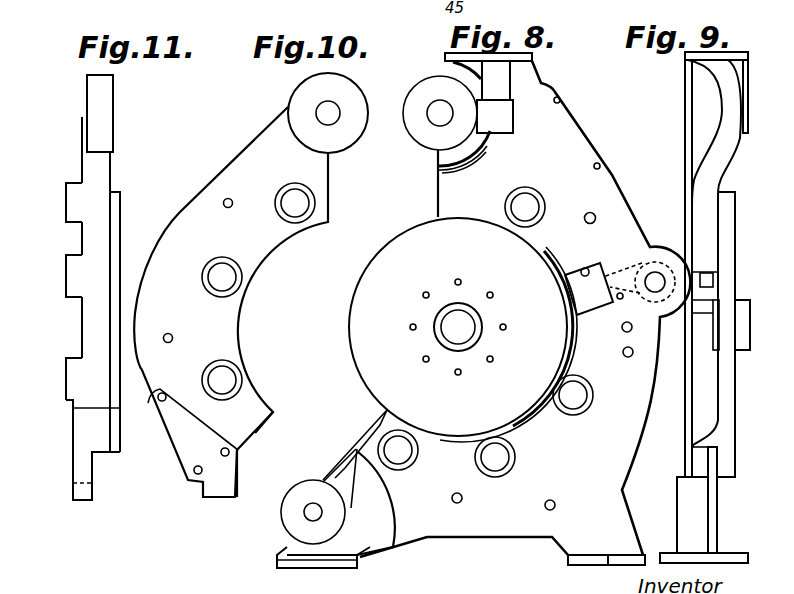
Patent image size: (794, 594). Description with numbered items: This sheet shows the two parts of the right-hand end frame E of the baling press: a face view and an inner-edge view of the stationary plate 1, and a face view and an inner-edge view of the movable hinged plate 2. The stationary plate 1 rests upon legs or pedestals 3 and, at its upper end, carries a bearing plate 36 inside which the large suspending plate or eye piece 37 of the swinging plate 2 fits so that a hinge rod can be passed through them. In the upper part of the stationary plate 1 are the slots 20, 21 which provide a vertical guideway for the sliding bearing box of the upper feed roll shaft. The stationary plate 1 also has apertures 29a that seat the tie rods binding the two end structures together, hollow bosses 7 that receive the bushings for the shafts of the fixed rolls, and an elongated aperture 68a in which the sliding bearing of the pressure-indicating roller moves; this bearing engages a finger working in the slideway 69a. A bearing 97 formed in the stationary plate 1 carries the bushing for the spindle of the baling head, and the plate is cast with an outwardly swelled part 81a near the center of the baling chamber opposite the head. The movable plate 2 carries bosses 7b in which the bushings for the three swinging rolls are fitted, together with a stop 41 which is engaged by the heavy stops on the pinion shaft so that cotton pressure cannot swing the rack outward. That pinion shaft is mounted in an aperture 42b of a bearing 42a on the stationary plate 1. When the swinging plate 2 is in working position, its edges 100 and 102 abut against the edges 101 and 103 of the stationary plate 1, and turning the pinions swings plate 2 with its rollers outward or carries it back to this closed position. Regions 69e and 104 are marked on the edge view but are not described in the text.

In FIG. 8, the stationary plate 1 is at (485, 180).
In FIG. 9, the stationary plate 1 is at (705, 170).
In FIG. 11, the movable hinged plate 2 is at (103, 174).
In FIG. 10, the movable hinged plate 2 is at (231, 302).
In FIG. 10, the legs or pedestals 3 is at (335, 558).
In FIG. 8, the legs or pedestals 3 is at (603, 563).
In FIG. 9, the legs or pedestals 3 is at (735, 543).
In FIG. 8, the hollow bosses 7 is at (543, 205).
In FIG. 9, the hollow bosses 7 is at (716, 192).
In FIG. 11, the bosses 7b is at (72, 380).
In FIG. 10, the bosses 7b is at (208, 372).
In FIG. 8, the slot 20 is at (502, 80).
In FIG. 8, the slot 21 is at (513, 118).
In FIG. 8, the apertures 29a is at (590, 212).
In FIG. 8, the bearing plates 36 is at (432, 82).
In FIG. 10, the suspending plates or eye pieces 37 is at (300, 93).
In FIG. 11, the stops 41 is at (73, 490).
In FIG. 10, the stops 41 is at (203, 485).
In FIG. 10, the bearings 42a is at (285, 508).
In FIG. 9, the bearings 42a is at (700, 518).
In FIG. 10, the apertures 42b is at (304, 516).
In FIG. 8, the elongated apertures 68a is at (583, 270).
In FIG. 8, the slideway 69a is at (655, 262).
In FIG. 9, the stop 69e is at (705, 272).
In FIG. 8, the outwardly swelled parts 81a is at (358, 373).
In FIG. 8, the bearing 97 is at (480, 325).
In FIG. 9, the bearing 97 is at (741, 300).
In FIG. 10, the edge 100 is at (262, 418).
In FIG. 10, the edge 101 is at (362, 436).
In FIG. 10, the edge 102 is at (258, 484).
In FIG. 10, the edge 103 is at (338, 505).
In FIG. 10, the rod end 104 is at (345, 456).
In FIG. 9, the rod end 104 is at (695, 453).
In FIG. 8, the end frame E is at (438, 169).